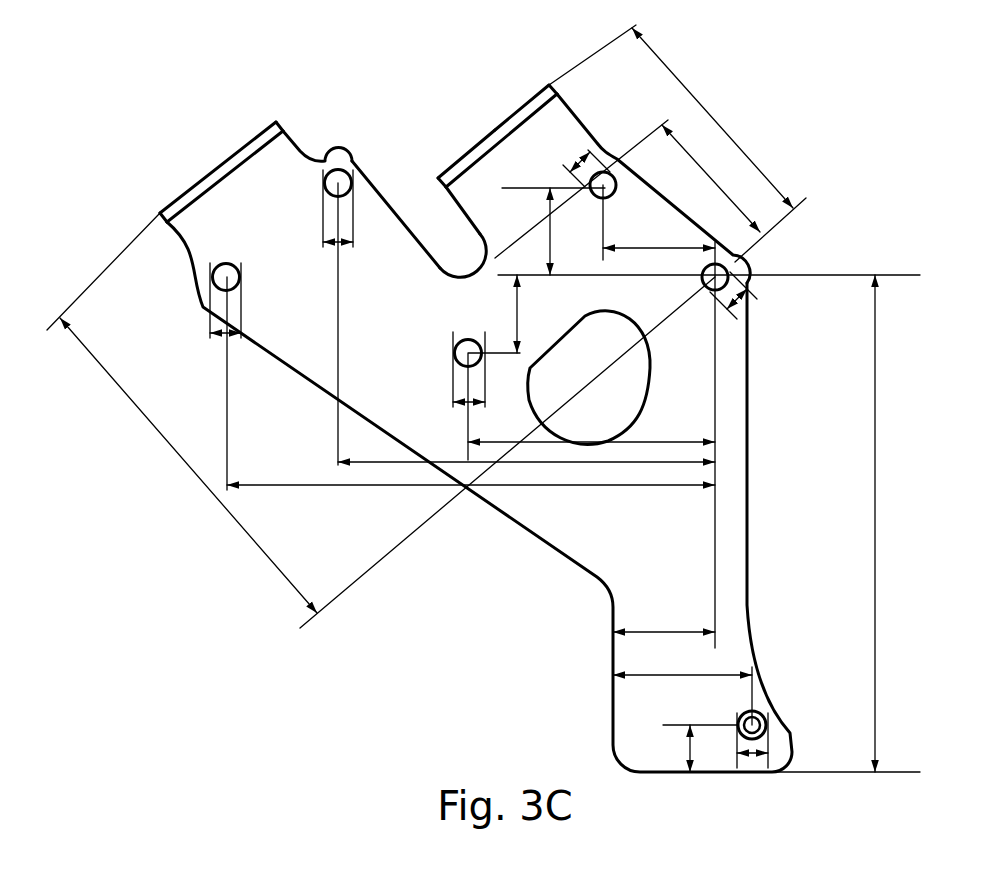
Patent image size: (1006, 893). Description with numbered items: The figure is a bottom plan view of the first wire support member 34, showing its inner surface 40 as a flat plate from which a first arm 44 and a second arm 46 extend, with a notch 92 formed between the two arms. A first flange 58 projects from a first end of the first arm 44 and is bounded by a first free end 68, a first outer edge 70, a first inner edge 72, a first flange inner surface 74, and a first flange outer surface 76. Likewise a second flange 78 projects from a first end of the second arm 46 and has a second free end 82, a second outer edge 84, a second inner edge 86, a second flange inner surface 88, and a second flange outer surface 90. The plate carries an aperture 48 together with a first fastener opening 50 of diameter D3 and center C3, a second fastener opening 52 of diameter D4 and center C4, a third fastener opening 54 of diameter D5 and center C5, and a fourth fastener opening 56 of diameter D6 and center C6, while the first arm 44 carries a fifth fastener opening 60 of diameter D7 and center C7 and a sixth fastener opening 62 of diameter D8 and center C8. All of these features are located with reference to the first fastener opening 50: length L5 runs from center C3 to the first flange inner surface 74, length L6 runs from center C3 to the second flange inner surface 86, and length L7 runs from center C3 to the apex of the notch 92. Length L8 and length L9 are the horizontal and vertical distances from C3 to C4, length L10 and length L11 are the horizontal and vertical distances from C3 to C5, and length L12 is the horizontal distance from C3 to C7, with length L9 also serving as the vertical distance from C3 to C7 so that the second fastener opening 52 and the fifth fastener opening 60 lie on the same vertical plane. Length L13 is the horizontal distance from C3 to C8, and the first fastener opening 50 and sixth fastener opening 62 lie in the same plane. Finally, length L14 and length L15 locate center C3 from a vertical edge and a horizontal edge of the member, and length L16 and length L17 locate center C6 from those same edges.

The first wire support member 34 is at (448, 392).
The inner surface 40 is at (448, 392).
The first arm 44 is at (419, 236).
The second arm 46 is at (583, 127).
The aperture 48 is at (655, 372).
The first fastener opening 50 is at (704, 283).
The second fastener opening 52 is at (615, 172).
The third fastener opening 54 is at (454, 352).
The fourth fastener opening 56 is at (764, 714).
The first flange 58 is at (197, 139).
The fifth fastener opening 60 is at (330, 158).
The sixth fastener opening 62 is at (220, 266).
The first free end 68 is at (220, 166).
The first outer edge 70 is at (160, 223).
The first inner edge 72 is at (276, 120).
The first flange inner surface 74 is at (257, 153).
The first flange outer surface 76 is at (173, 203).
The second flange 78 is at (472, 104).
The second free end 82 is at (511, 119).
The second outer edge 84 is at (556, 86).
The second inner edge 86 is at (437, 179).
The second flange inner surface 88 is at (498, 142).
The second flange outer surface 90 is at (526, 100).
The notch 92 is at (456, 281).
The center of first fastener opening C3 is at (726, 270).
The center of second fastener opening C4 is at (606, 186).
The center of third fastener opening C5 is at (468, 340).
The center of fourth fastener opening C6 is at (766, 723).
The center of fifth fastener opening C7 is at (338, 182).
The center of sixth fastener opening C8 is at (228, 277).
The diameter of first fastener opening D3 is at (750, 285).
The diameter of second fastener opening D4 is at (582, 155).
The diameter of third fastener opening D5 is at (462, 404).
The diameter of fourth fastener opening D6 is at (752, 774).
The diameter of fifth fastener opening D7 is at (361, 222).
The diameter of sixth fastener opening D8 is at (220, 338).
The length L5 is at (182, 464).
The length L6 is at (676, 73).
The length L7 is at (716, 183).
The length L8 is at (672, 250).
The length L9 is at (552, 250).
The length L10 is at (660, 441).
The length L11 is at (518, 326).
The length L12 is at (433, 470).
The length L13 is at (375, 487).
The length L14 is at (665, 630).
The length L15 is at (877, 522).
The length L16 is at (680, 677).
The length L17 is at (688, 750).